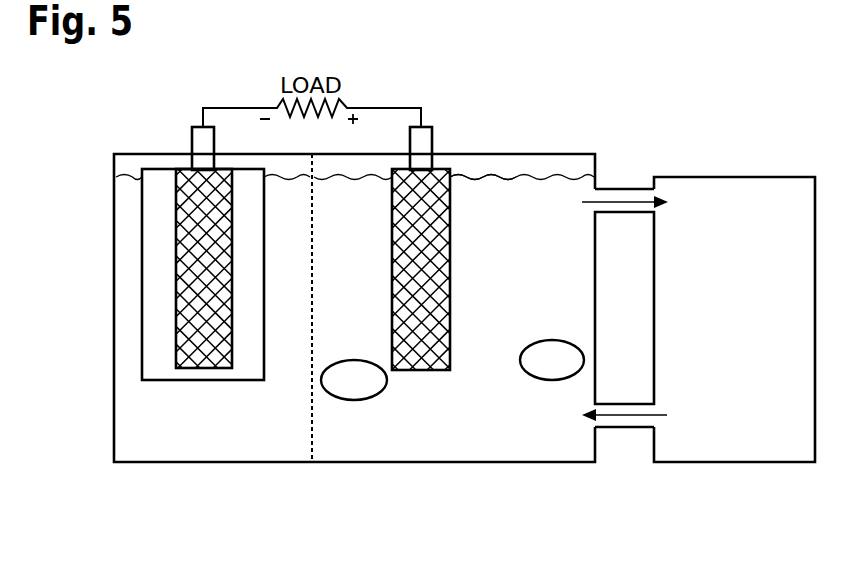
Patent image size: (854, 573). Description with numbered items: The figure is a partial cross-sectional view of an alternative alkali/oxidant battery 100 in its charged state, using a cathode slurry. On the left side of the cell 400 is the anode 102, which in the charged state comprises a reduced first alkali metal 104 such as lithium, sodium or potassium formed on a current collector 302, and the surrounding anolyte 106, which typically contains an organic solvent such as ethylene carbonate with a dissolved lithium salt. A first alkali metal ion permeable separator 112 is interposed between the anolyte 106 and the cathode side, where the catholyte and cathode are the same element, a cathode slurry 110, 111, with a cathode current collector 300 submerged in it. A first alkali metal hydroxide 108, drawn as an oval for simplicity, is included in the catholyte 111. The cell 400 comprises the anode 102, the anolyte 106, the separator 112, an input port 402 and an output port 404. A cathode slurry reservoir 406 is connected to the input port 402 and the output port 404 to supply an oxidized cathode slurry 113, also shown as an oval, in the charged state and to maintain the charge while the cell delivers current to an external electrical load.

The battery 100 is at (464, 276).
The anode 102 is at (153, 249).
The reduced first alkali metal 104 is at (162, 277).
The anolyte 106 is at (222, 450).
The first alkali metal hydroxide 108 is at (373, 390).
The cathode 110 is at (497, 455).
The catholyte 111 is at (483, 315).
The first alkali metal ion permeable separator 112 is at (312, 432).
The oxidized cathode slurry 113 is at (570, 370).
The cathode current collector 300 is at (412, 273).
The current collector 302 is at (195, 353).
The cell 400 is at (597, 160).
The input port 402 is at (625, 446).
The output port 404 is at (628, 170).
The cathode slurry reservoir 406 is at (734, 319).